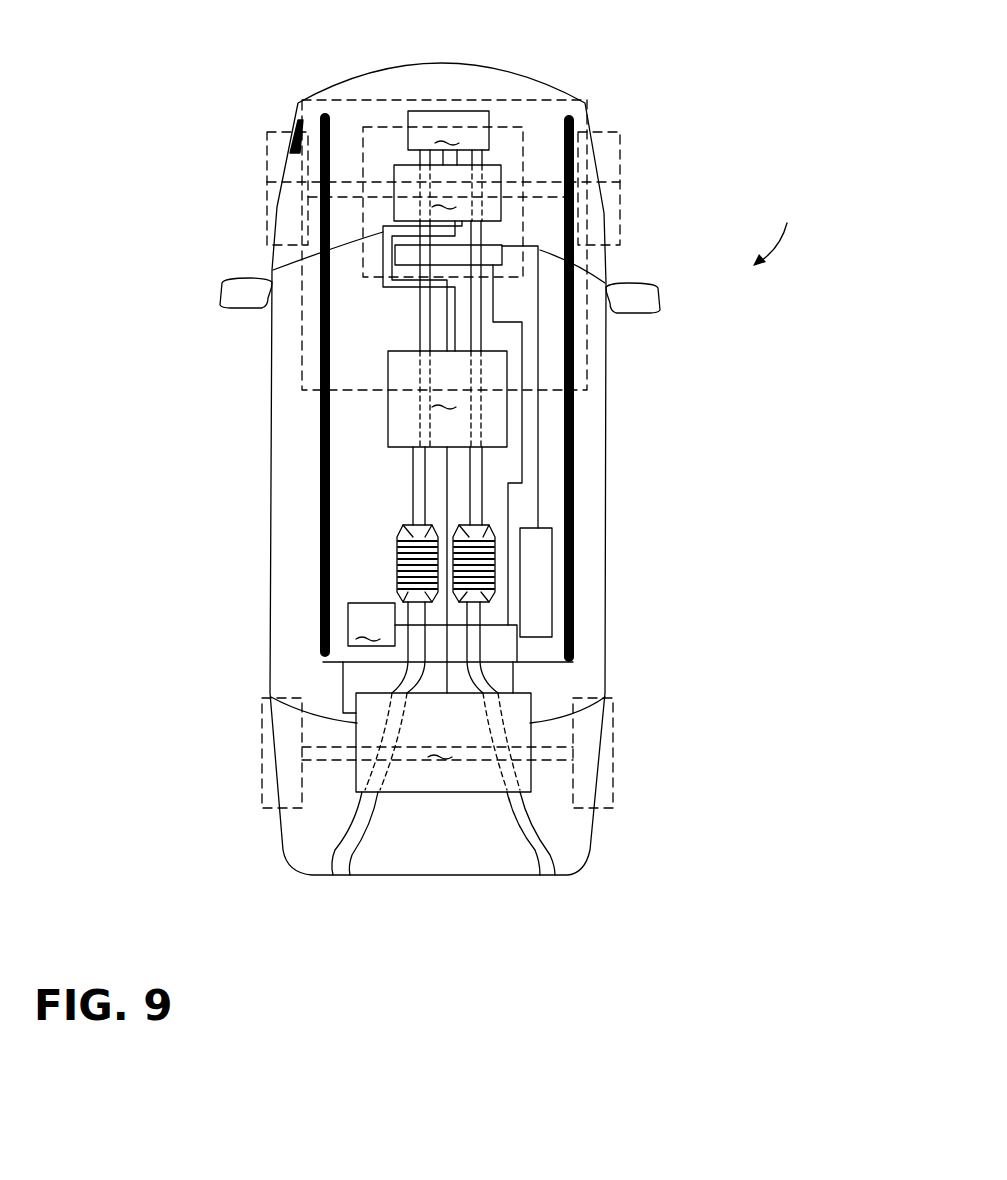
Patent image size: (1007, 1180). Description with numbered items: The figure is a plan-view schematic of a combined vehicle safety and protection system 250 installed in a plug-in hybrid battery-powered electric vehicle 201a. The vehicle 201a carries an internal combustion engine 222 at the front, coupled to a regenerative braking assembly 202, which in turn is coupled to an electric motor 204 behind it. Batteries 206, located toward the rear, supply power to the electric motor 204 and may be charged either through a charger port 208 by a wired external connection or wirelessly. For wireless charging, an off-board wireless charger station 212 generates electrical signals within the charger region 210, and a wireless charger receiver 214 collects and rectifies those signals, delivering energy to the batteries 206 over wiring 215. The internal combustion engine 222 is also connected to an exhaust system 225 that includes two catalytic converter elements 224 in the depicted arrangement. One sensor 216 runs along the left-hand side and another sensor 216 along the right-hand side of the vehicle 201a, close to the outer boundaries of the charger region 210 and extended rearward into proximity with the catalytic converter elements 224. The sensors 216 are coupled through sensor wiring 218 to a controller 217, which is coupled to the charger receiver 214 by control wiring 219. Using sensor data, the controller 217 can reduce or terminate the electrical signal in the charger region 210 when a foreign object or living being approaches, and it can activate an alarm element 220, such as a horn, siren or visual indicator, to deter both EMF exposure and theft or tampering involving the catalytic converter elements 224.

The plug-in hybrid battery-powered electric vehicle 201a is at (606, 648).
The regenerative braking assembly 202 is at (447, 193).
The electric motor 204 is at (447, 399).
The batteries 206 is at (443, 742).
The charger port 208 is at (300, 127).
The charger region 210 is at (533, 100).
The wireless charger station 212 is at (383, 127).
The wireless charger receiver 214 is at (502, 247).
The wiring 215 is at (523, 457).
The sensors 216 is at (337, 270).
The controller 217 is at (532, 568).
The sensor wiring 218 is at (356, 662).
The control wiring 219 is at (538, 432).
The alarm element 220 is at (371, 624).
The internal combustion engine 222 is at (448, 130).
The catalytic converter elements 224 is at (403, 527).
The exhaust system 225 is at (413, 490).
The combined vehicle safety and protection system 250 is at (786, 229).